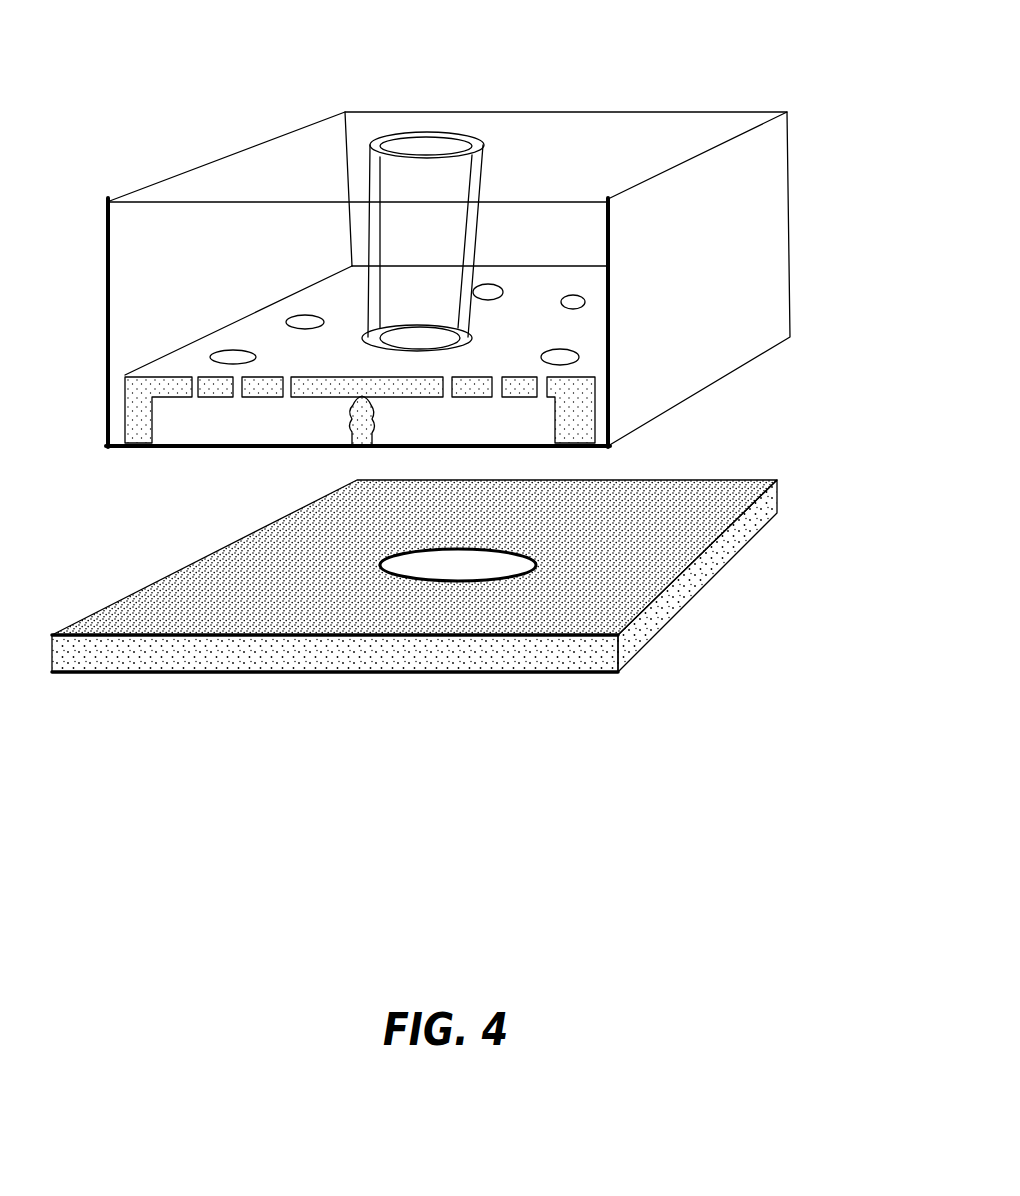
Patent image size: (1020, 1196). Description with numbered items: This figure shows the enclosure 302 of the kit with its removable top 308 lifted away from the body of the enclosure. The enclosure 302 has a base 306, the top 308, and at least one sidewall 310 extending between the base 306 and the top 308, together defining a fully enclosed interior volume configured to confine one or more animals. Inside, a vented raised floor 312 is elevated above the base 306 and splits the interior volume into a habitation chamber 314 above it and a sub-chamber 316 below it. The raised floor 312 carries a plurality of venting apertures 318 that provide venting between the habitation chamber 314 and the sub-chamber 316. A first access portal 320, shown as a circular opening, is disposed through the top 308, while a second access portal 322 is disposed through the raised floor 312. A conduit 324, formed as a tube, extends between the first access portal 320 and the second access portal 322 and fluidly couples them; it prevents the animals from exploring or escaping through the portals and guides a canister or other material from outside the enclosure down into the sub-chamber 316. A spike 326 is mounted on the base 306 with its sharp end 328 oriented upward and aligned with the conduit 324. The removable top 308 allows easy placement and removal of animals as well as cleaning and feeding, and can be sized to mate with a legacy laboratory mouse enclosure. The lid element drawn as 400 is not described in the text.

The enclosure 302 is at (462, 274).
The base 306 is at (155, 452).
The top 308 is at (278, 132).
The sidewall 310 is at (755, 263).
The vented raised floor 312 is at (321, 400).
The habitation chamber 314 is at (232, 258).
The sub-chamber 316 is at (260, 424).
The venting apertures 318 is at (560, 310).
The first access portal 320 is at (495, 580).
The second access portal 322 is at (433, 357).
The conduit 324 is at (620, 298).
The spike 326 is at (350, 440).
The sharp end 328 is at (365, 400).
The base plate 400 is at (414, 615).